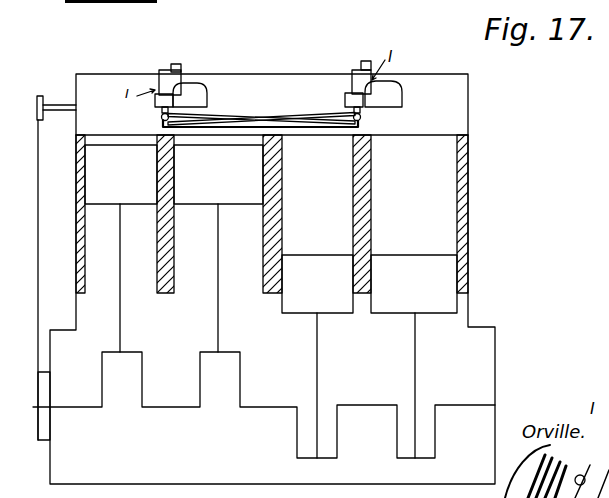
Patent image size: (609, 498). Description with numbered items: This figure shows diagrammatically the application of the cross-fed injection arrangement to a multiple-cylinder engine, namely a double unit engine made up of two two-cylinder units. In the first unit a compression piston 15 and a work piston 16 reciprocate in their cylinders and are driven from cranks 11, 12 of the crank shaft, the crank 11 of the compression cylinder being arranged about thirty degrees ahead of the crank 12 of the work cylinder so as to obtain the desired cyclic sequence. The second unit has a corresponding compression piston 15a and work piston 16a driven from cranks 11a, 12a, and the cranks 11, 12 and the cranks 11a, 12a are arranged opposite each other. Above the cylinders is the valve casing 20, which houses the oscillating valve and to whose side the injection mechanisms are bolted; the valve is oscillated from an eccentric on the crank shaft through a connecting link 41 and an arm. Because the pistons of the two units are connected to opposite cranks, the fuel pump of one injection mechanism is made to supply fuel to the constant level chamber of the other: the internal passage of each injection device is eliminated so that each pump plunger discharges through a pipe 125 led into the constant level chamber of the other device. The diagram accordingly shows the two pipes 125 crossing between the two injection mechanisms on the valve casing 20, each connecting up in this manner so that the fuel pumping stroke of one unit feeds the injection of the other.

The valve casing 20 is at (265, 74).
The connecting link 41 is at (37, 263).
The compression piston 15 is at (121, 174).
The work piston 16 is at (218, 174).
The compression piston 15a is at (317, 284).
The work piston 16a is at (414, 284).
The crank 11 is at (133, 348).
The crank 12 is at (228, 350).
The crank 11a is at (322, 460).
The crank 12a is at (424, 460).
The pipe 125 is at (320, 118).